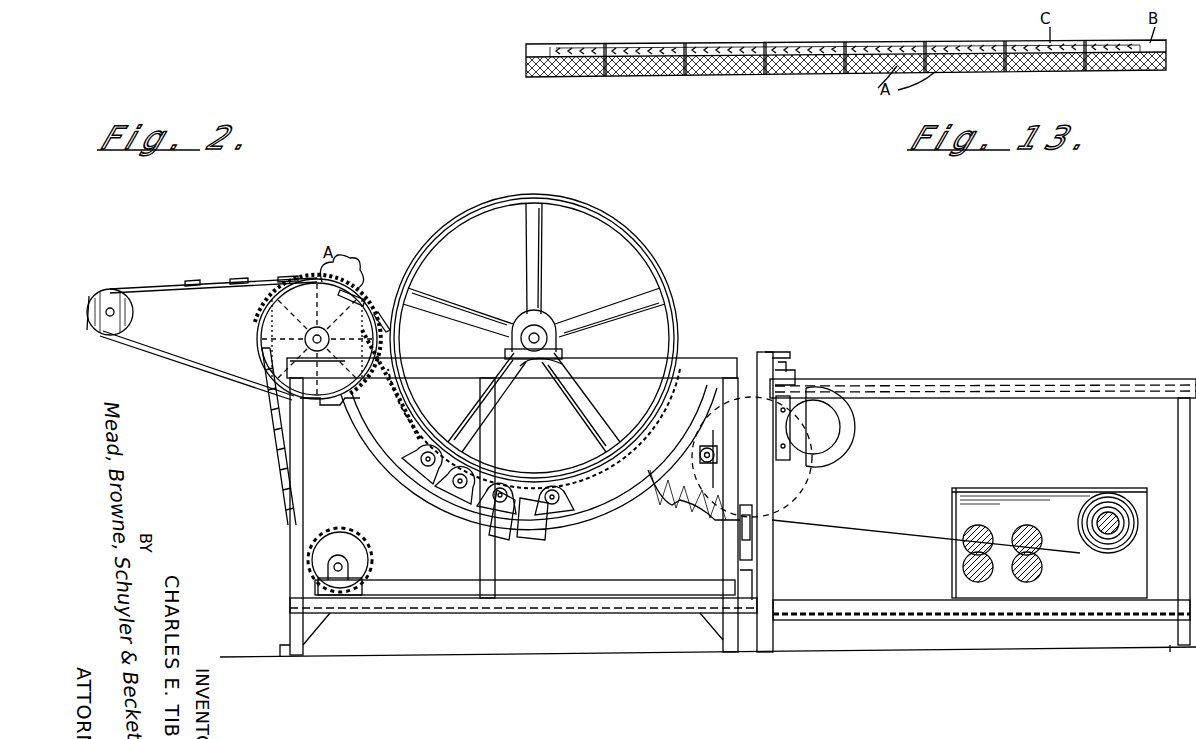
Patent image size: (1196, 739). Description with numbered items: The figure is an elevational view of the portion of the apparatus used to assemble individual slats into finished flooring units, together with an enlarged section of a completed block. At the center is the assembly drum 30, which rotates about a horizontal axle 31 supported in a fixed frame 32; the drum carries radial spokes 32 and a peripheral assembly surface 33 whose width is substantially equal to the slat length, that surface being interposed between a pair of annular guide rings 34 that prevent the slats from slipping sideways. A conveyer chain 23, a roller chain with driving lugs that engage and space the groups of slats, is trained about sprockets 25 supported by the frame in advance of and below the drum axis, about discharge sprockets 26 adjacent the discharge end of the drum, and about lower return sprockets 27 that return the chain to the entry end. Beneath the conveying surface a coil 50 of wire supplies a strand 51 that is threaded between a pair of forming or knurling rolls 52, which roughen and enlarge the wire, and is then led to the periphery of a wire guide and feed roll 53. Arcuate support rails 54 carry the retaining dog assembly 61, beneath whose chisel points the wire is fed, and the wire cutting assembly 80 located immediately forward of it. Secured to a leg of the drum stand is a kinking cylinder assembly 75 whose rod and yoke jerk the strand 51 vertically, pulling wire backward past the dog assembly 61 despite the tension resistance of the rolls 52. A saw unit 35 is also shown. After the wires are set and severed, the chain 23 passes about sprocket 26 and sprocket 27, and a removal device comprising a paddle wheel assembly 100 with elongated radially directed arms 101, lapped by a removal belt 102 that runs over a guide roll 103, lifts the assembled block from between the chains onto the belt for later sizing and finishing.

The conveyer chain 23 is at (622, 462).
The sprockets 25 is at (708, 503).
The sprockets 26 is at (325, 398).
The lower return sprockets 27 is at (360, 548).
The assembly drum 30 is at (662, 263).
The horizontal axle 31 is at (537, 337).
The fixed frame 32 is at (543, 253).
The peripheral surface 33 is at (558, 317).
The annular guide rings 34 is at (611, 221).
The saw unit 35 is at (839, 451).
The coil of wire 50 is at (853, 429).
The strand of wire 51 is at (845, 532).
The forming or knurling rolls 52 is at (1018, 552).
The wire guide and feed roll 53 is at (587, 504).
The support rails 54 is at (455, 517).
The retaining dog assembly 61 is at (536, 528).
The kinking cylinder assembly 75 is at (760, 550).
The wire cutting assembly 80 is at (514, 525).
The paddle wheel assembly 100 is at (246, 340).
The radially directed arms 101 is at (272, 302).
The removal belt 102 is at (193, 365).
The guide roll 103 is at (128, 310).